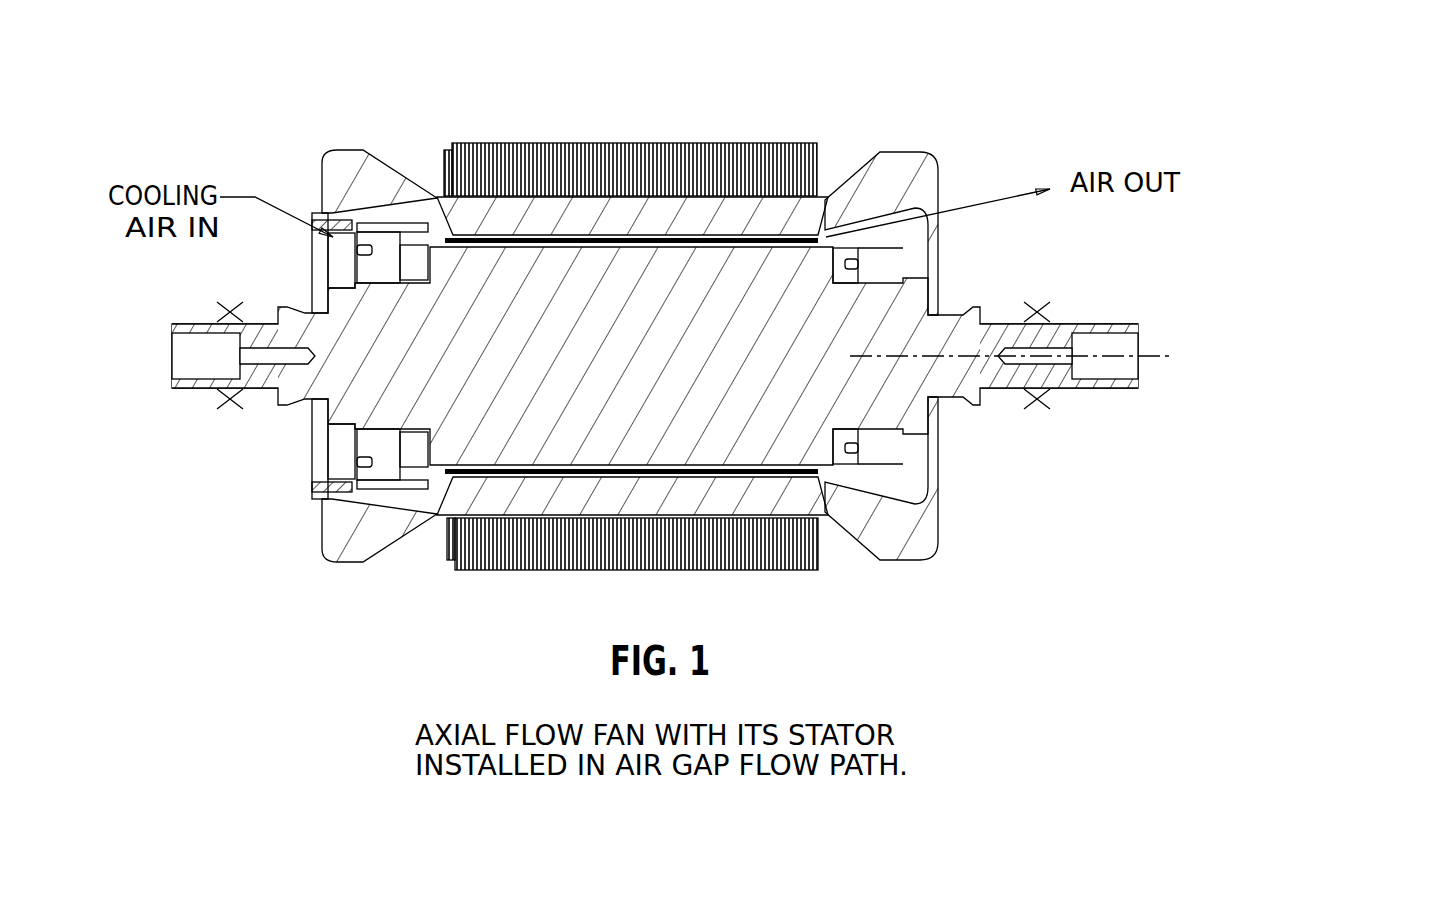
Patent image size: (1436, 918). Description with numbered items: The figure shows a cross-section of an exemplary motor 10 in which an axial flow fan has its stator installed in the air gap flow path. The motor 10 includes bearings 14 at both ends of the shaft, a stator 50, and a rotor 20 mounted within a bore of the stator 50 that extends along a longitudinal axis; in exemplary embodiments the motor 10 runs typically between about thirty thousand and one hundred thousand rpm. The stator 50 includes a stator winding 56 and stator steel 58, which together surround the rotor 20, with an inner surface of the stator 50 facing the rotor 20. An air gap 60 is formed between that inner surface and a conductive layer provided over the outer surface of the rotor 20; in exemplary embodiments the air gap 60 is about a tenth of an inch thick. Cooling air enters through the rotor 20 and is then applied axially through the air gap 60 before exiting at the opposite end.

The motor 10 is at (755, 353).
The bearings 14 is at (695, 393).
The rotor 20 is at (677, 349).
The stator 50 is at (918, 408).
The stator winding 56 is at (860, 381).
The stator steel 58 is at (1255, 575).
The air gap 60 is at (604, 266).